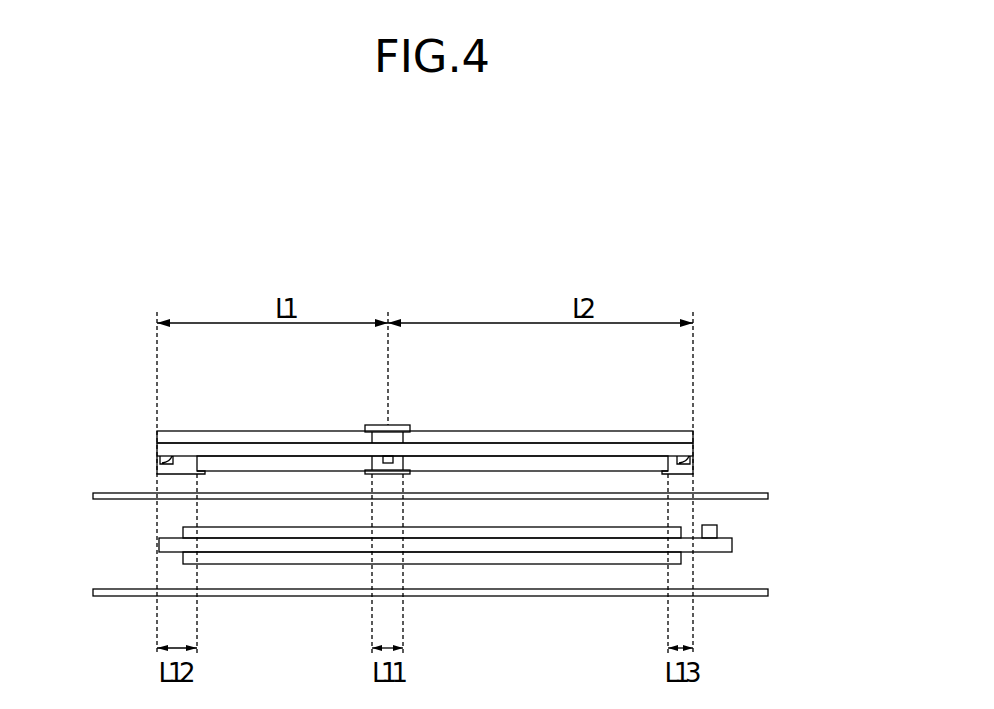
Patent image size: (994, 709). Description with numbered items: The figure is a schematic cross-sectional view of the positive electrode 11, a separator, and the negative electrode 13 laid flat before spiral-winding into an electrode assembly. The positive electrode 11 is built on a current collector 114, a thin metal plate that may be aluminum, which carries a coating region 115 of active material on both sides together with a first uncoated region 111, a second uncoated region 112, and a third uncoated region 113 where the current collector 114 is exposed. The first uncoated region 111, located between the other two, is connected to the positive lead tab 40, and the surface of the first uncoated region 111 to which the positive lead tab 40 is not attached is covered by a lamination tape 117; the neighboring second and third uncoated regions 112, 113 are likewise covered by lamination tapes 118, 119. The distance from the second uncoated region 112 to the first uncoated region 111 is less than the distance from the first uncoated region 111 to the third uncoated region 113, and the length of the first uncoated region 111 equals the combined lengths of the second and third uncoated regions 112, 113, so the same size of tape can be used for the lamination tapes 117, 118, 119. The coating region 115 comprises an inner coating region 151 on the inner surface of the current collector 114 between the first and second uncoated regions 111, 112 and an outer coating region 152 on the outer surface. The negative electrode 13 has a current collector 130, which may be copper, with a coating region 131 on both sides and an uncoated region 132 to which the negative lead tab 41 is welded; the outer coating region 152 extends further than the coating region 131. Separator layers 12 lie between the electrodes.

The positive electrode 11 is at (429, 417).
The adhesive or protective film layer 12 is at (93, 496).
The negative electrode 13 is at (443, 580).
The positive lead tab 40 is at (398, 504).
The negative lead tab 41 is at (712, 530).
The first uncoated region 111 is at (367, 462).
The second uncoated region 112 is at (160, 454).
The third uncoated region 113 is at (682, 458).
The current collector 114 is at (517, 448).
The coating region 115 is at (425, 410).
The lamination tape 117 is at (386, 464).
The lamination tape 118 is at (168, 465).
The lamination tape 119 is at (682, 468).
The current collector 130 is at (580, 552).
The coating region 131 is at (522, 551).
The uncoated region 132 is at (714, 552).
The inner coating region 151 is at (220, 391).
The outer coating region 152 is at (240, 437).